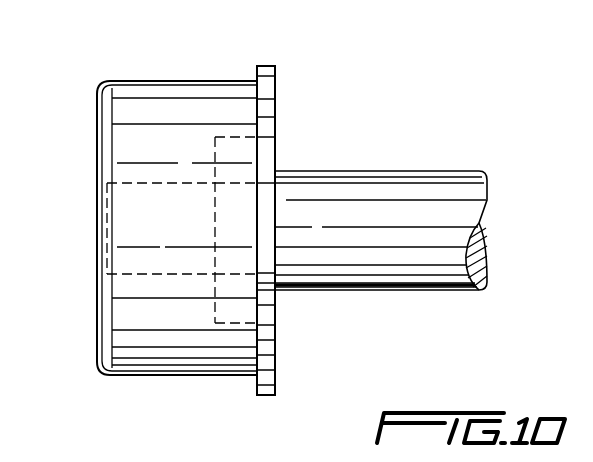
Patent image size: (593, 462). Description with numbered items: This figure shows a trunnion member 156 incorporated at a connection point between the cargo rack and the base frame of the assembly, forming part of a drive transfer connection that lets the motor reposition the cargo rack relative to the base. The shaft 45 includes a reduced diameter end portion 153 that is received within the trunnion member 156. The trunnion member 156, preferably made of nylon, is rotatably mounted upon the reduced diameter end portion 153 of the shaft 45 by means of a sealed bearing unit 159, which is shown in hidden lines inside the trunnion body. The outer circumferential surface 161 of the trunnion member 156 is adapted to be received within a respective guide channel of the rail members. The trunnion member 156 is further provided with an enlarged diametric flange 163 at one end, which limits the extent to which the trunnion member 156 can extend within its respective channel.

The outer circumferential surface 161 is at (143, 81).
The enlarged diametric flange 163 is at (267, 82).
The sealed bearing unit 159 is at (272, 149).
The shaft 45 is at (382, 190).
The trunnion member 156 is at (123, 151).
The reduced diameter end portion 153 is at (124, 232).